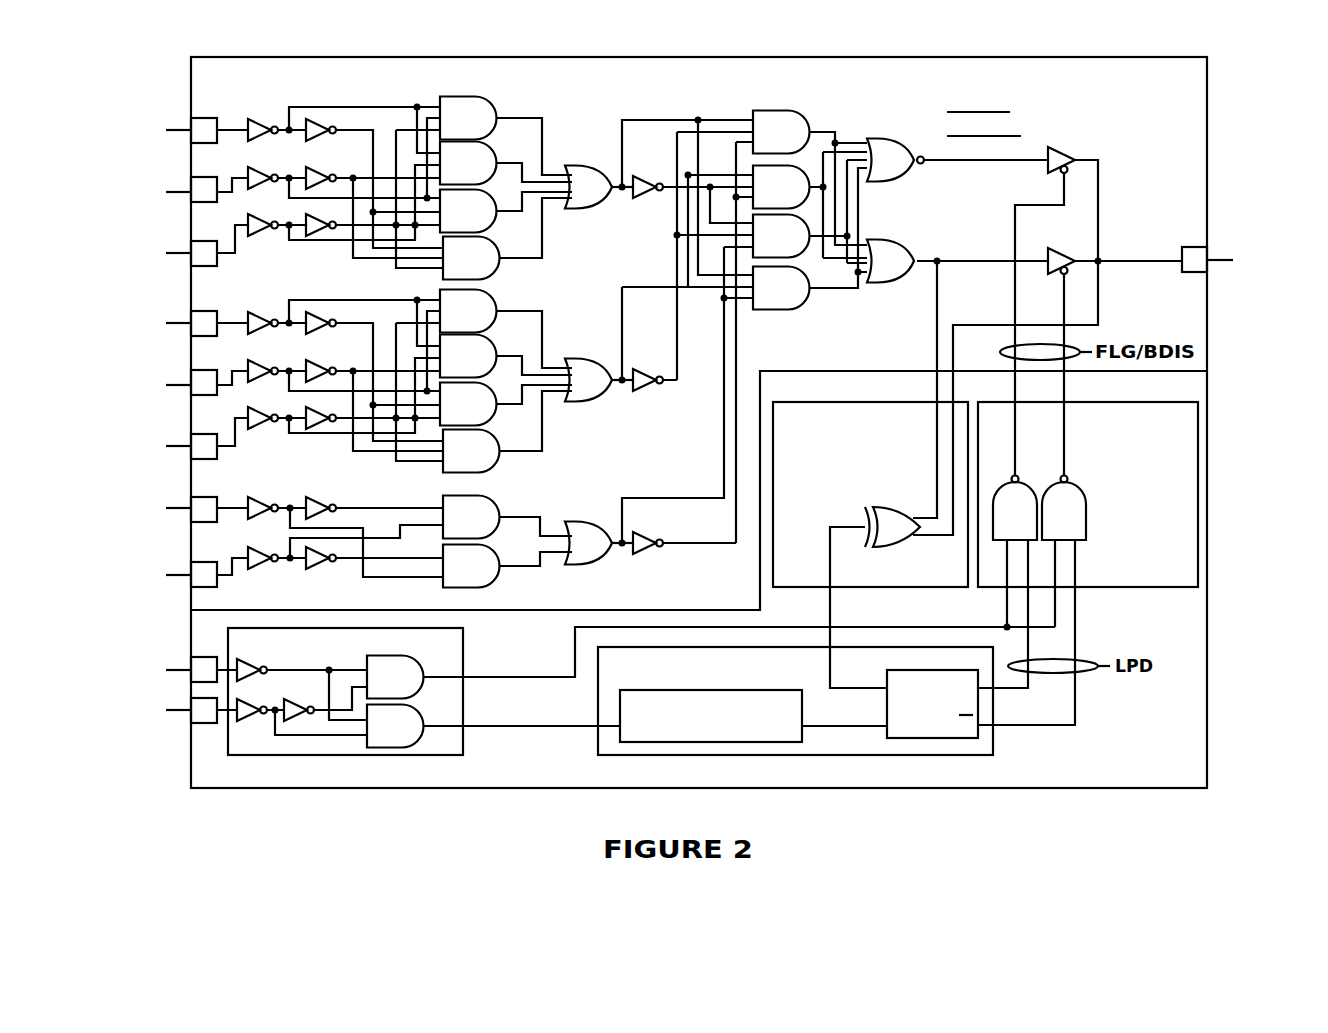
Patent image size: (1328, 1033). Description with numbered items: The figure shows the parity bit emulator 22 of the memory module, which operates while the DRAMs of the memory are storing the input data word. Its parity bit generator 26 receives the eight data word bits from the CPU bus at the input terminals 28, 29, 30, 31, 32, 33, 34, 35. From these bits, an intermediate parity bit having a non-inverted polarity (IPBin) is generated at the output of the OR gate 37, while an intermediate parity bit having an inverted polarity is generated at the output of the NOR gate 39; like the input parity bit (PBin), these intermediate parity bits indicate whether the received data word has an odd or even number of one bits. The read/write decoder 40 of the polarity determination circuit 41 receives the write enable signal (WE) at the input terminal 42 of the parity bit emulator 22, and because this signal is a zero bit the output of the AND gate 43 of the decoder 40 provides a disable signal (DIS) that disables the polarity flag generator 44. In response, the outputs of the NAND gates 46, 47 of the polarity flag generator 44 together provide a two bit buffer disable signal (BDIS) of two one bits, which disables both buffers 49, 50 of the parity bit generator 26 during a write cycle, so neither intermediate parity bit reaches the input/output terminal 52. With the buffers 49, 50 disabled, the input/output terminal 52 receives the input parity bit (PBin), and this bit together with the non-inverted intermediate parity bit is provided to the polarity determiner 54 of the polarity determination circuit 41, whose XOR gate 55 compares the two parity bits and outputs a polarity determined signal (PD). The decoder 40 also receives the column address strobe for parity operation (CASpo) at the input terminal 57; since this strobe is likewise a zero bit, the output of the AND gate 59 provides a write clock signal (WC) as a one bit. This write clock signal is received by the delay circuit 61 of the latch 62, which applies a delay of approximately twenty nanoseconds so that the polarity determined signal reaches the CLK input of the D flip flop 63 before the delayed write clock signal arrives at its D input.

The parity bit emulator 22 is at (1233, 117).
The parity bit generator 26 is at (191, 92).
The input terminal 28 is at (205, 118).
The input terminal 29 is at (199, 177).
The input terminal 30 is at (196, 241).
The input terminal 31 is at (204, 311).
The input terminal 32 is at (197, 371).
The input terminal 33 is at (195, 434).
The input terminal 34 is at (199, 497).
The input terminal 35 is at (196, 562).
The OR gate 37 is at (893, 283).
The NOR gate 39 is at (893, 138).
The read/write decoder 40 is at (338, 755).
The polarity determination circuit 41 is at (1207, 672).
The input terminal 42 is at (197, 724).
The AND gate 43 is at (392, 656).
The polarity flag generator 44 is at (1113, 402).
The NAND gate 46 is at (1033, 484).
The NAND gate 47 is at (1086, 522).
The buffer 49 is at (1057, 247).
The buffer 50 is at (1060, 146).
The input/output terminal 52 is at (1188, 273).
The polarity determiner 54 is at (785, 402).
The XOR gate 55 is at (877, 510).
The input terminal 57 is at (201, 656).
The AND gate 59 is at (418, 740).
The delay circuit 61 is at (697, 690).
The latch 62 is at (603, 755).
The D flip flop 63 is at (905, 670).